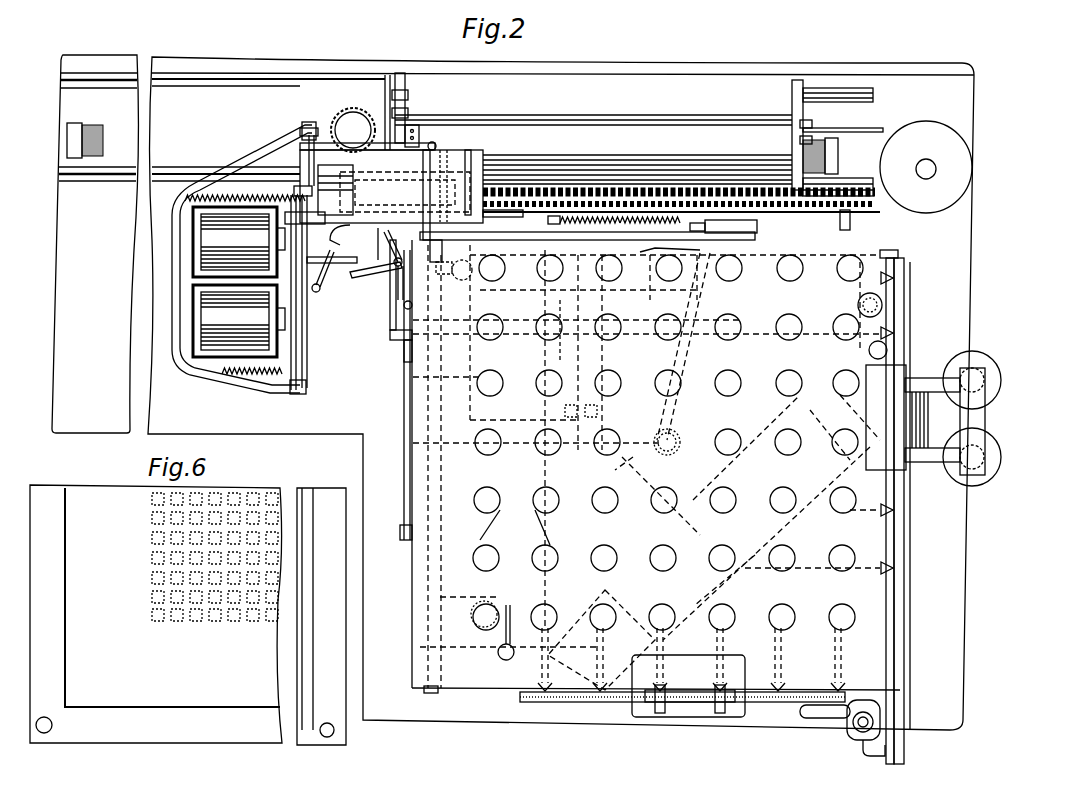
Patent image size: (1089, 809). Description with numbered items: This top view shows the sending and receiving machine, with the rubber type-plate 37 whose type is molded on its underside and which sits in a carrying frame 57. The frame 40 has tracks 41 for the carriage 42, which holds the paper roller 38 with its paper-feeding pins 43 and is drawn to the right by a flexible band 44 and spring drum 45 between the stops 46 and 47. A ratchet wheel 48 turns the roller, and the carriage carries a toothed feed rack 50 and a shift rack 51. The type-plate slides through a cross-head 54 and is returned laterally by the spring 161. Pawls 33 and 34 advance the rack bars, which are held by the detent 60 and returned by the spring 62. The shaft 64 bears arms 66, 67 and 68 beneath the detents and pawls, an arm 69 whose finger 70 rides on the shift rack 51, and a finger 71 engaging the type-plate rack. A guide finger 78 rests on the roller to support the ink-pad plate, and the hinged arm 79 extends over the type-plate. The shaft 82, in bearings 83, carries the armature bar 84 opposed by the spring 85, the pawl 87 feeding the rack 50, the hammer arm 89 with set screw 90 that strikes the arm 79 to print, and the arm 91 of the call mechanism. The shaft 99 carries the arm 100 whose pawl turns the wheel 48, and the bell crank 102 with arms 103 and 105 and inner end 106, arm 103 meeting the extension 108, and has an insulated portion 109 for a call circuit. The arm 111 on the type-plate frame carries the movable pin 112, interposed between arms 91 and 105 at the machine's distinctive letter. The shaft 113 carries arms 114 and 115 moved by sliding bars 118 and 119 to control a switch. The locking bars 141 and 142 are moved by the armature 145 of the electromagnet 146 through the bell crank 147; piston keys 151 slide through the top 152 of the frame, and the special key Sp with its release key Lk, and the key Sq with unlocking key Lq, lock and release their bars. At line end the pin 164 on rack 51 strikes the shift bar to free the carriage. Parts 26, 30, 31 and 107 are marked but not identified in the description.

In FIG. 2, the electromagnet coils 26 is at (239, 282).
In FIG. 2, the keyboard 30 is at (679, 580).
In FIG. 2, the key levers 31 is at (801, 467).
In FIG. 2, the pawl 33 is at (720, 218).
In FIG. 2, the pawl 34 is at (411, 432).
In FIG. 2, the type-plate 37 is at (391, 186).
In FIG. 6, the type-plate 37 is at (215, 573).
In FIG. 2, the paper roller 38 is at (637, 159).
In FIG. 2, the frame 40 is at (339, 402).
In FIG. 2, the tracks 41 is at (874, 93).
In FIG. 2, the carriage 42 is at (588, 112).
In FIG. 2, the pins 43 is at (410, 114).
In FIG. 2, the flexible band 44 is at (843, 121).
In FIG. 2, the spring drum 45 is at (926, 167).
In FIG. 2, the stop 46 is at (838, 156).
In FIG. 2, the stop 47 is at (94, 126).
In FIG. 2, the ratchet wheel 48 is at (353, 130).
In FIG. 2, the feed rack 50 is at (268, 186).
In FIG. 2, the shift rack 51 is at (872, 212).
In FIG. 2, the cross-head 54 is at (398, 248).
In FIG. 2, the carrying frame 57 is at (334, 235).
In FIG. 2, the detent 60 is at (660, 246).
In FIG. 2, the spring 62 is at (606, 223).
In FIG. 2, the shaft 64 is at (598, 410).
In FIG. 2, the arm 66 is at (690, 226).
In FIG. 2, the arm 67 is at (515, 410).
In FIG. 2, the arm 68 is at (530, 335).
In FIG. 2, the arm 69 is at (527, 250).
In FIG. 2, the finger 70 is at (462, 210).
In FIG. 2, the finger 71 is at (437, 195).
In FIG. 2, the guide finger 78 is at (420, 137).
In FIG. 2, the arm 79 is at (422, 186).
In FIG. 2, the shaft 82 is at (297, 358).
In FIG. 2, the bearings 83 is at (300, 128).
In FIG. 2, the armature bar 84 is at (297, 326).
In FIG. 2, the spring 85 is at (240, 376).
In FIG. 2, the pawl 87 is at (298, 186).
In FIG. 2, the hammer arm 89 is at (322, 143).
In FIG. 2, the set screw 90 is at (436, 146).
In FIG. 2, the arm 91 is at (323, 268).
In FIG. 2, the shaft 99 is at (404, 306).
In FIG. 2, the arm 100 is at (360, 206).
In FIG. 2, the bell crank 102 is at (394, 262).
In FIG. 2, the arm 103 is at (384, 243).
In FIG. 2, the arm 105 is at (376, 275).
In FIG. 2, the inner end 106 is at (381, 284).
In FIG. 2, the bracket 107 is at (382, 330).
In FIG. 2, the extension 108 is at (316, 215).
In FIG. 2, the insulated portion 109 is at (404, 346).
In FIG. 2, the arm 111 is at (332, 253).
In FIG. 2, the movable pin 112 is at (322, 296).
In FIG. 2, the shaft 113 is at (465, 274).
In FIG. 2, the arm 114 is at (470, 249).
In FIG. 2, the arm 115 is at (436, 252).
In FIG. 2, the bar 118 is at (900, 256).
In FIG. 2, the bar 119 is at (430, 694).
In FIG. 2, the locking bar 141 is at (905, 320).
In FIG. 2, the locking bar 142 is at (682, 688).
In FIG. 2, the armature 145 is at (986, 420).
In FIG. 2, the electromagnet 146 is at (1001, 380).
In FIG. 2, the bell crank 147 is at (858, 745).
In FIG. 2, the piston keys 151 is at (600, 490).
In FIG. 2, the top 152 is at (574, 470).
In FIG. 2, the spring 161 is at (222, 194).
In FIG. 2, the pin 164 is at (830, 222).
In FIG. 2, the special key Sp is at (471, 621).
In FIG. 2, the key Lk is at (495, 640).
In FIG. 2, the special key Sq is at (857, 305).
In FIG. 2, the unlocking key Lq is at (868, 350).